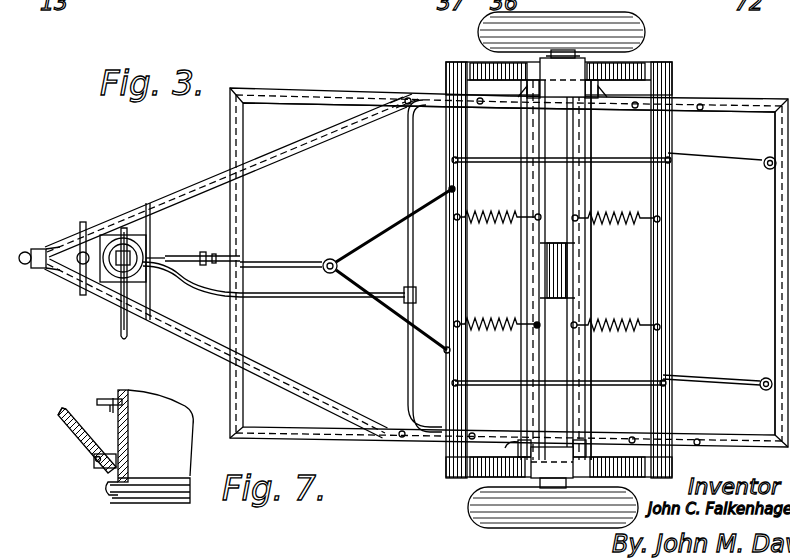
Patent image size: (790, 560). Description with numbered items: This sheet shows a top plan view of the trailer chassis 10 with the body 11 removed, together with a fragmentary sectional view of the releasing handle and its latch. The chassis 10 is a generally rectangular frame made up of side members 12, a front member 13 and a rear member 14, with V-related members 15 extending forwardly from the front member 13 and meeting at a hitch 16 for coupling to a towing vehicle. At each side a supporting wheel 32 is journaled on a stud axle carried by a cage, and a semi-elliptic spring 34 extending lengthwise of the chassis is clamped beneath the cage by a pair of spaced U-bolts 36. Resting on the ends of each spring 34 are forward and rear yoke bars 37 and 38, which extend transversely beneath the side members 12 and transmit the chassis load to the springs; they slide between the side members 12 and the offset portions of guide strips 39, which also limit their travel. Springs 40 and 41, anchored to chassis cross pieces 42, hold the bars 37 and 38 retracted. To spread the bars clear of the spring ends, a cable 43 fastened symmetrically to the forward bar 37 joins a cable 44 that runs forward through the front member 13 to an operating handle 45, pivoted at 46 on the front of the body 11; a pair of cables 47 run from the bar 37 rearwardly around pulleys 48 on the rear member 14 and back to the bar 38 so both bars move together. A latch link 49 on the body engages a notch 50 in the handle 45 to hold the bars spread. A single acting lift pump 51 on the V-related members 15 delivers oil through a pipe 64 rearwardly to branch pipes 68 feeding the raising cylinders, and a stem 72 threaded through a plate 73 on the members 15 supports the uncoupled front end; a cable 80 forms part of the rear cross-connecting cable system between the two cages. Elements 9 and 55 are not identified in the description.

In FIG. 3, the section line 9- 9 is at (552, 556).
In FIG. 3, the chassis 10 is at (256, 80).
In FIG. 7, the body 11 is at (128, 432).
In FIG. 3, the side member 12 is at (340, 87).
In FIG. 7, the side member 12 is at (120, 500).
In FIG. 3, the front member 13 is at (245, 200).
In FIG. 3, the rear member 14 is at (706, 216).
In FIG. 3, the V-related member 15 is at (180, 190).
In FIG. 3, the hitch 16 is at (28, 248).
In FIG. 3, the supporting wheel 32 is at (632, 32).
In FIG. 3, the semi-elliptic spring 34 is at (643, 66).
In FIG. 3, the U-bolt 36 is at (533, 270).
In FIG. 3, the forward yoke bar 37 is at (463, 128).
In FIG. 3, the rear yoke bar 38 is at (672, 129).
In FIG. 3, the guide strip 39 is at (563, 58).
In FIG. 3, the spring 40 is at (502, 221).
In FIG. 3, the spring 41 is at (617, 226).
In FIG. 3, the cross piece 42 is at (557, 296).
In FIG. 3, the cable 43 is at (362, 238).
In FIG. 3, the cable 44 is at (291, 254).
In FIG. 7, the cable 44 is at (153, 491).
In FIG. 3, the operating handle 45 is at (182, 260).
In FIG. 7, the operating handle 45 is at (70, 437).
In FIG. 3, the pivot 46 is at (210, 256).
In FIG. 7, the pivot 46 is at (96, 460).
In FIG. 3, the cable 47 is at (510, 163).
In FIG. 3, the pulley 48 is at (760, 160).
In FIG. 7, the latch link 49 is at (100, 402).
In FIG. 7, the notch 50 is at (62, 419).
In FIG. 3, the lift pump 51 is at (140, 248).
In FIG. 3, the lever 55 is at (121, 314).
In FIG. 3, the pipe 64 is at (214, 289).
In FIG. 3, the branch pipe 68 is at (411, 166).
In FIG. 3, the stem 72 is at (77, 252).
In FIG. 3, the plate 73 is at (141, 291).
In FIG. 3, the cable 80 is at (593, 190).